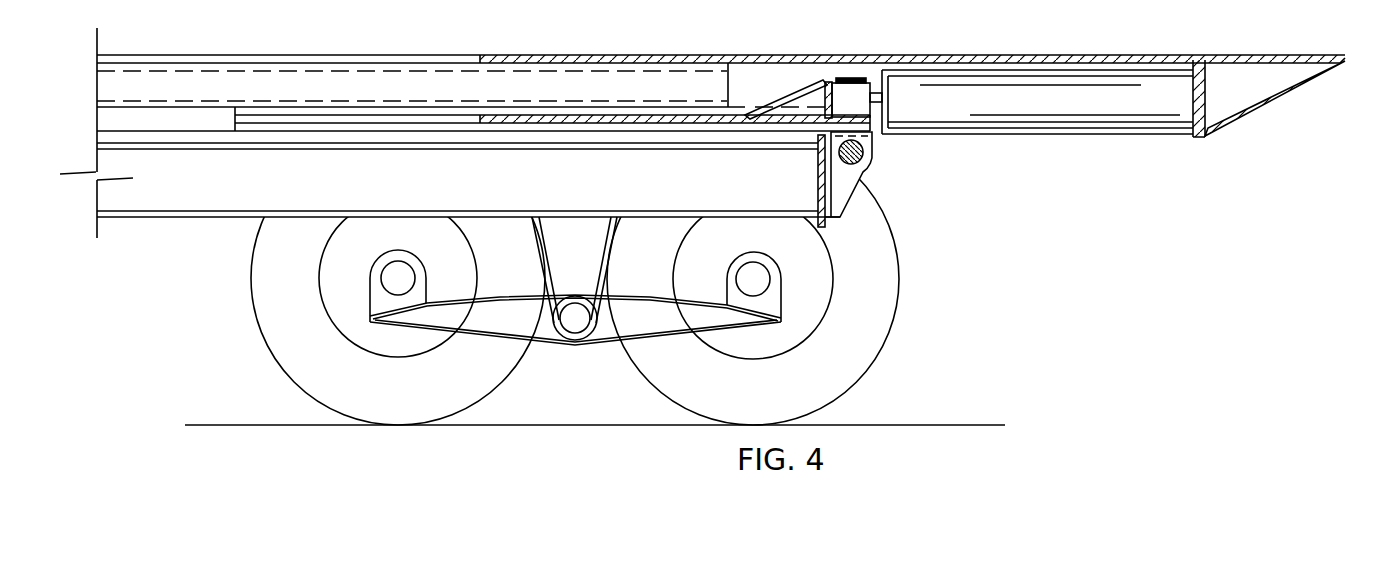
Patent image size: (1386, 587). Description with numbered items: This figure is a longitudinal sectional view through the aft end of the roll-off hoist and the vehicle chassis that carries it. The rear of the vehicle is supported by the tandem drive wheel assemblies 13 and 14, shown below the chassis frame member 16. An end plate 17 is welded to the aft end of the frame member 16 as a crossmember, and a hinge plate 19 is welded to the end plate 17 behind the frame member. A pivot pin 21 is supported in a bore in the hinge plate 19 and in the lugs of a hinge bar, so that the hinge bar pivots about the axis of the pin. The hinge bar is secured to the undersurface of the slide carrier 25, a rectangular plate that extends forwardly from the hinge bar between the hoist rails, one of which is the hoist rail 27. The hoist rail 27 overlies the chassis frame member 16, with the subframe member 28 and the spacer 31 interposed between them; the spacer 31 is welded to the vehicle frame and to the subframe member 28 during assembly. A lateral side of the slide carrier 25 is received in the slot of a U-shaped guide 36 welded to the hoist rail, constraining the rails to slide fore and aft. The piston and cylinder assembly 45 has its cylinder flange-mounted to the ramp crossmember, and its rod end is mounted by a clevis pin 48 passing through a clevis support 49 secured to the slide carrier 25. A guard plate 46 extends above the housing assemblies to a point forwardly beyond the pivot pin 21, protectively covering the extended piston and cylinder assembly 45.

The tandem drive wheel assembly 13 is at (320, 405).
The tandem drive wheel assembly 14 is at (676, 407).
The chassis frame member 16 is at (183, 197).
The end plate 17 is at (816, 180).
The hinge plate 19 is at (838, 196).
The pivot pin 21 is at (875, 152).
The slide carrier 25 is at (658, 117).
The hoist rail 27 is at (307, 55).
The subframe member 28 is at (487, 135).
The spacer 31 is at (438, 147).
The guide 36 is at (315, 128).
The piston and cylinder assembly 45 is at (1108, 105).
The guard plate 46 is at (1052, 58).
The clevis pin 48 is at (853, 78).
The clevis support 49 is at (785, 95).